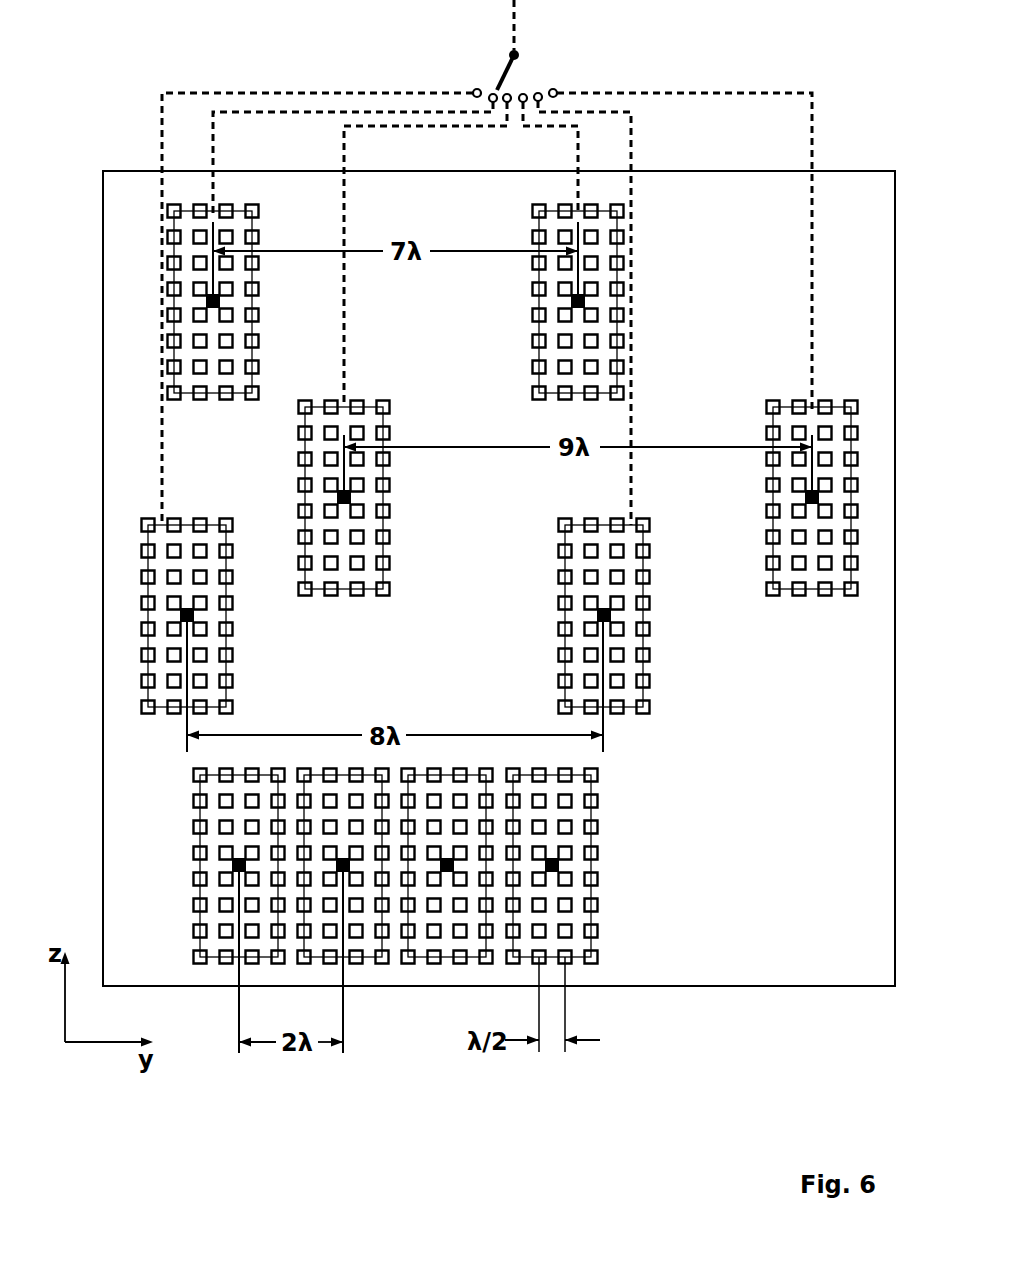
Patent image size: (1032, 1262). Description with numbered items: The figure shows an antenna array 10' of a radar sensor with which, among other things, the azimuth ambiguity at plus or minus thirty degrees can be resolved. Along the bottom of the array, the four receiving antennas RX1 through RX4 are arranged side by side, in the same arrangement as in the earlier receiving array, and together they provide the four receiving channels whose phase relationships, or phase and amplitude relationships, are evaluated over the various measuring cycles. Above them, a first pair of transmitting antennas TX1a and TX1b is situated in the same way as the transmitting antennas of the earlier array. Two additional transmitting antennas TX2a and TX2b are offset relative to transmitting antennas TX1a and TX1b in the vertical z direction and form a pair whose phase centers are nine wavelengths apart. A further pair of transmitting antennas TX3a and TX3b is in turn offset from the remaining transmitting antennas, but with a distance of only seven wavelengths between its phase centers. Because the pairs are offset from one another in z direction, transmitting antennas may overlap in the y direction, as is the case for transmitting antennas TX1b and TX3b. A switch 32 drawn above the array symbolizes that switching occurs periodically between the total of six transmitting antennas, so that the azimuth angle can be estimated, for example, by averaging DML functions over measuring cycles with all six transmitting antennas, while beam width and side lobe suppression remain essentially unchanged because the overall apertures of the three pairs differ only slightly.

The antenna array 10' is at (499, 610).
The switch 32 is at (502, 68).
The transmitting antenna TX1a is at (229, 640).
The transmitting antenna TX1b is at (645, 640).
The transmitting antenna TX2a is at (383, 522).
The transmitting antenna TX2b is at (770, 498).
The transmitting antenna TX3a is at (222, 396).
The transmitting antenna TX3b is at (620, 305).
The receiving antenna RX1 is at (197, 812).
The receiving antenna RX4 is at (595, 812).